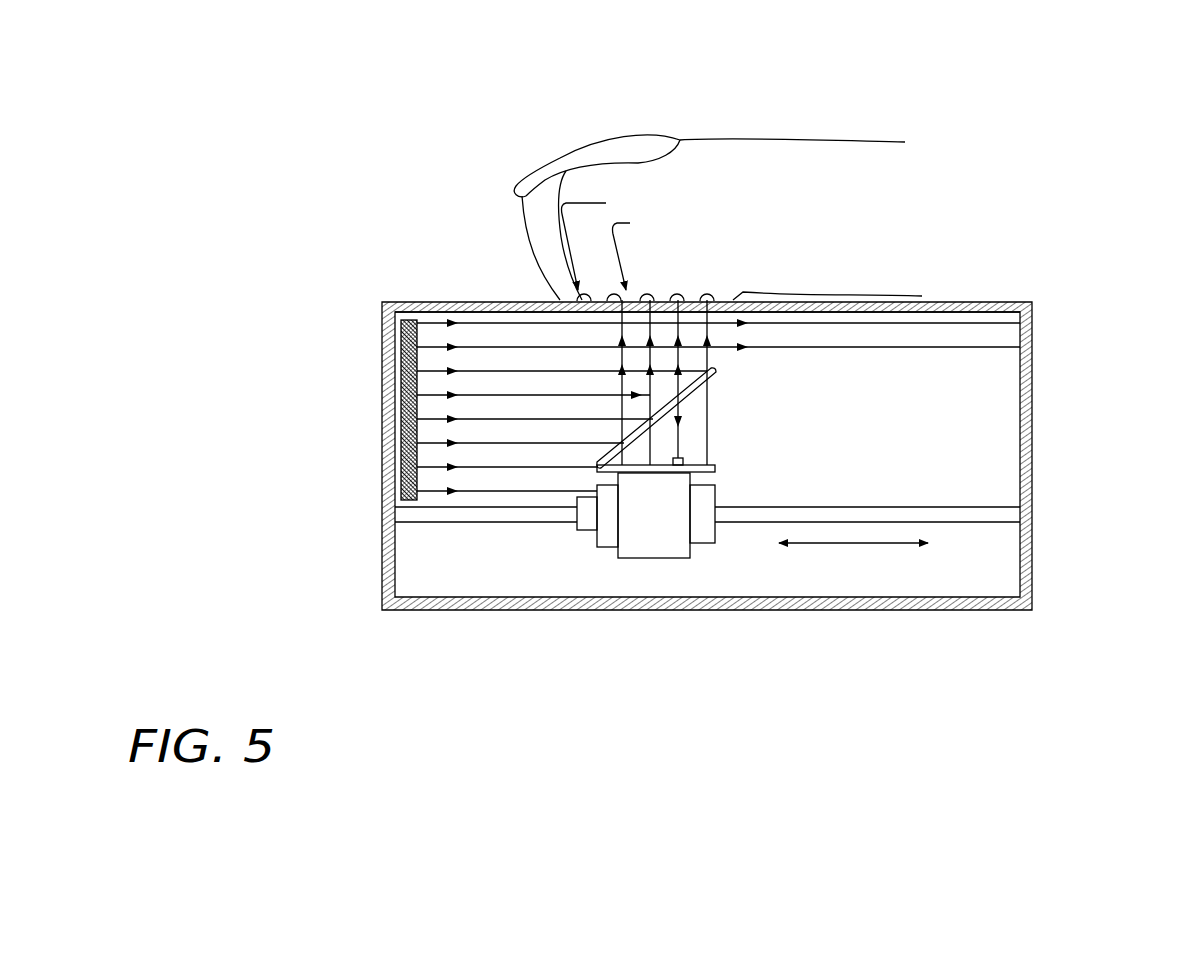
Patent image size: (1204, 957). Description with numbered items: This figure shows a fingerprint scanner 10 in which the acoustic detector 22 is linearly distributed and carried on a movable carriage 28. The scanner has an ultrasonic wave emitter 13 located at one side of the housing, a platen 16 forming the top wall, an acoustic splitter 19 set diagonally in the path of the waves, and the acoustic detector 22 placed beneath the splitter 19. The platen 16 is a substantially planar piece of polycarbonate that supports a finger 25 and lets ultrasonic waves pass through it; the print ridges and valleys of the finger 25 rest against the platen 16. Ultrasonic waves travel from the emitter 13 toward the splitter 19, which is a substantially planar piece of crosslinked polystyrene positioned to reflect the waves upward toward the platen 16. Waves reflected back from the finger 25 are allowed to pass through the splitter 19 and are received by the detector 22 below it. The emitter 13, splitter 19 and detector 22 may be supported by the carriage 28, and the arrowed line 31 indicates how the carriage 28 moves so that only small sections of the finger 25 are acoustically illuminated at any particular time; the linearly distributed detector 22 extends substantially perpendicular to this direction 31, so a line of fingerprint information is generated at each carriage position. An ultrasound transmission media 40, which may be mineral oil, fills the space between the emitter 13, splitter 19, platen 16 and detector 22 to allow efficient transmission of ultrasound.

The fingerprint scanner 10 is at (1078, 386).
The ultrasonic wave emitter 13 is at (410, 320).
The platen 16 is at (473, 302).
The acoustic splitter 19 is at (697, 385).
The acoustic detector 22 is at (684, 460).
The finger 25 is at (560, 143).
The carriage 28 is at (620, 548).
The arrowed line 31 is at (852, 544).
The ultrasound transmission media 40 is at (935, 409).